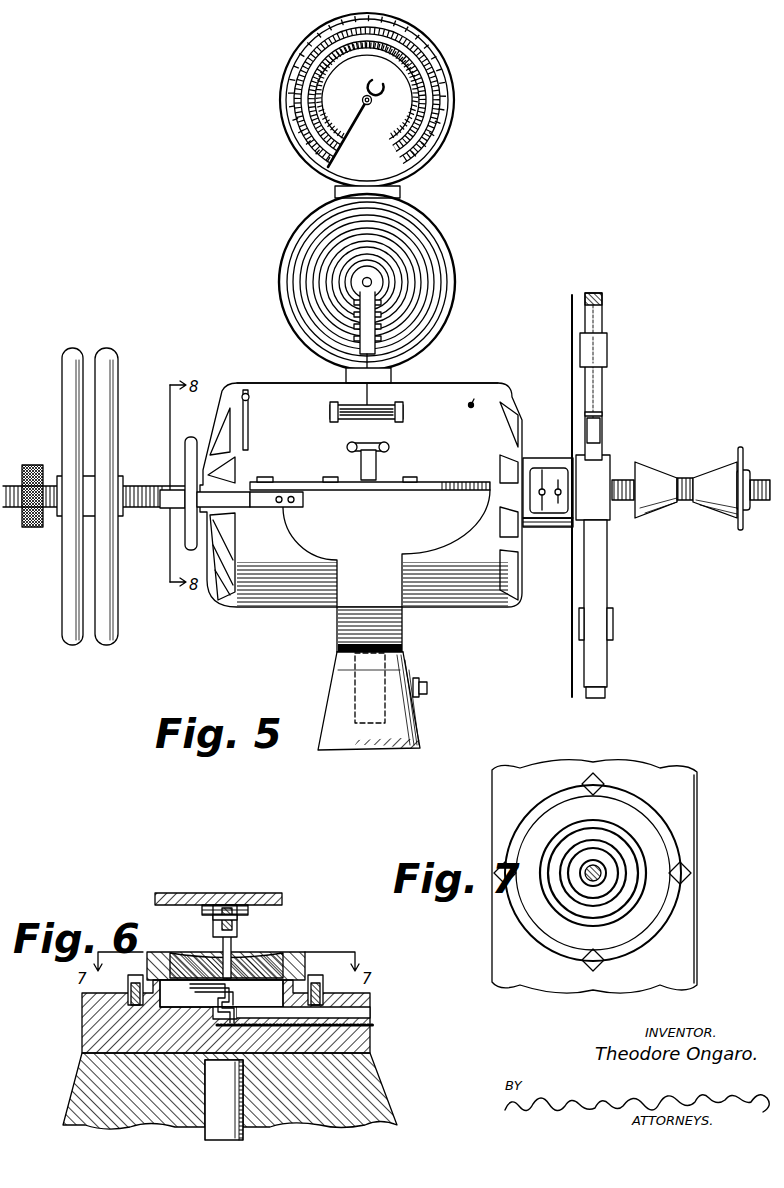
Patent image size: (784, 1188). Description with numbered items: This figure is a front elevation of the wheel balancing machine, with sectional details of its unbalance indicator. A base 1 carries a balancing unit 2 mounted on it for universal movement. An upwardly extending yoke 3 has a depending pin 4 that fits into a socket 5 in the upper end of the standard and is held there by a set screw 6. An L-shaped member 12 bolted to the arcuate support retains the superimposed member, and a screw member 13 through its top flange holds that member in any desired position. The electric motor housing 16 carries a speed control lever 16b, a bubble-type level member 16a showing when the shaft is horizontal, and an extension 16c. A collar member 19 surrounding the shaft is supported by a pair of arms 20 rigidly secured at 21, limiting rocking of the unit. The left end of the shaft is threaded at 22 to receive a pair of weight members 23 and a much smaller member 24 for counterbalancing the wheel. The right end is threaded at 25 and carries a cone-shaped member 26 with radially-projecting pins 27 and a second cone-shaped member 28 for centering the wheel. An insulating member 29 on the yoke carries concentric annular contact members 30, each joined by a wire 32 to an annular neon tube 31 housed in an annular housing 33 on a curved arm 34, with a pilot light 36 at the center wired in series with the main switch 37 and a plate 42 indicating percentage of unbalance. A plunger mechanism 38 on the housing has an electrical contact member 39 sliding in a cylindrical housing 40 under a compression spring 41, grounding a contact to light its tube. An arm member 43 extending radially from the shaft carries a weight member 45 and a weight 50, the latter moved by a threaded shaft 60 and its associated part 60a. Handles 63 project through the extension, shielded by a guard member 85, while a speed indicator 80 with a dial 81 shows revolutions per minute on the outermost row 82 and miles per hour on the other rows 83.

In FIG. 5, the base 1 is at (332, 727).
In FIG. 6, the base 1 is at (100, 1092).
In FIG. 5, the balancing unit 2 is at (300, 383).
In FIG. 5, the yoke 3 is at (395, 545).
In FIG. 6, the yoke 3 is at (100, 1017).
In FIG. 7, the yoke 3 is at (660, 786).
In FIG. 5, the depending pin 4 is at (410, 660).
In FIG. 6, the depending pin 4 is at (222, 1122).
In FIG. 5, the socket 5 is at (416, 716).
In FIG. 5, the set screw 6 is at (428, 686).
In FIG. 5, the L-shaped member 12 is at (418, 482).
In FIG. 5, the screw member 13 is at (376, 447).
In FIG. 5, the electric motor housing 16 is at (440, 383).
In FIG. 6, the electric motor housing 16 is at (167, 893).
In FIG. 5, the level member 16a is at (345, 415).
In FIG. 5, the lever 16b is at (249, 398).
In FIG. 5, the extension of the motor housing 16c is at (551, 528).
In FIG. 5, the collar member 19 is at (185, 450).
In FIG. 5, the arms 20 is at (237, 512).
In FIG. 5, the securing point 21 is at (285, 508).
In FIG. 5, the threaded portion of shaft 22 is at (146, 508).
In FIG. 5, the weight members 23 is at (118, 365).
In FIG. 5, the smaller weight member 24 is at (27, 465).
In FIG. 5, the threaded portion of shaft 25 is at (685, 478).
In FIG. 5, the cone-shaped member 26 is at (715, 504).
In FIG. 5, the radially-projecting pins 27 is at (740, 458).
In FIG. 5, the second cone-shaped member 28 is at (651, 518).
In FIG. 6, the insulating member 29 is at (303, 962).
In FIG. 7, the insulating member 29 is at (657, 927).
In FIG. 6, the annular electric contact members 30 is at (278, 958).
In FIG. 7, the annular electric contact members 30 is at (558, 912).
In FIG. 5, the neon tubes 31 is at (388, 276).
In FIG. 6, the wire 32 is at (228, 994).
In FIG. 5, the annular housing 33 is at (413, 213).
In FIG. 5, the curved arm 34 is at (393, 373).
In FIG. 6, the curved arm 34 is at (372, 1025).
In FIG. 5, the pilot light 36 is at (372, 280).
In FIG. 5, the main switch 37 is at (469, 408).
In FIG. 6, the plunger mechanism 38 is at (248, 912).
In FIG. 6, the electrical contact member 39 is at (223, 939).
In FIG. 7, the electrical contact member 39 is at (585, 868).
In FIG. 6, the cylindrical housing 40 is at (213, 918).
In FIG. 6, the compression spring 41 is at (227, 905).
In FIG. 5, the plate 42 is at (366, 404).
In FIG. 5, the arm member 43 is at (602, 393).
In FIG. 5, the weight member 45 is at (613, 621).
In FIG. 5, the weight 50 is at (607, 350).
In FIG. 5, the shaft 60 is at (596, 316).
In FIG. 5, the lower nut 60a is at (601, 430).
In FIG. 5, the handle 63 is at (542, 488).
In FIG. 5, the speed indicator 80 is at (288, 132).
In FIG. 5, the dial 81 is at (350, 163).
In FIG. 5, the outermost row of indications 82 is at (312, 147).
In FIG. 5, the rows of indications 83 is at (310, 97).
In FIG. 5, the guard member 85 is at (573, 592).